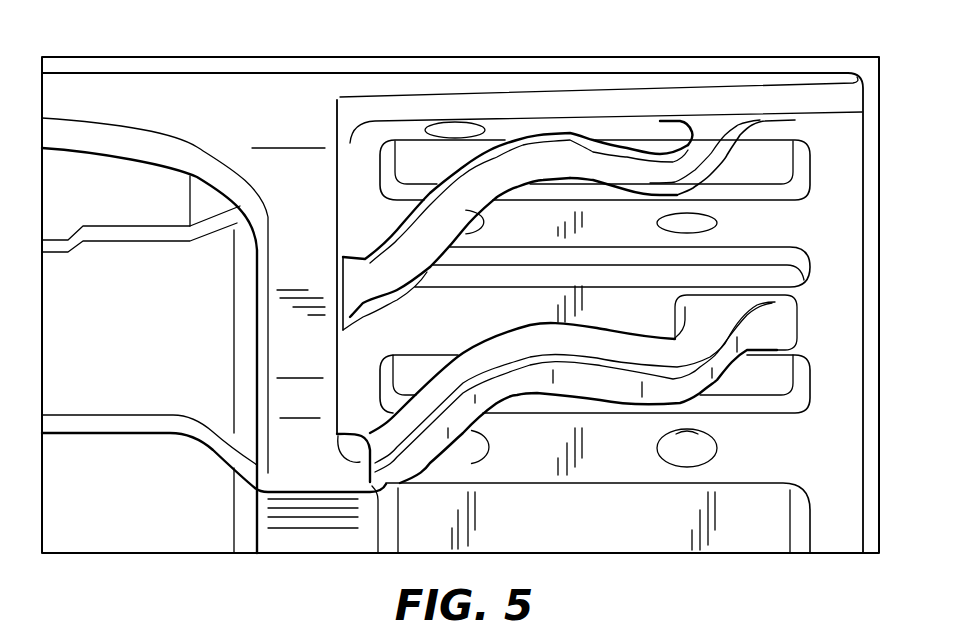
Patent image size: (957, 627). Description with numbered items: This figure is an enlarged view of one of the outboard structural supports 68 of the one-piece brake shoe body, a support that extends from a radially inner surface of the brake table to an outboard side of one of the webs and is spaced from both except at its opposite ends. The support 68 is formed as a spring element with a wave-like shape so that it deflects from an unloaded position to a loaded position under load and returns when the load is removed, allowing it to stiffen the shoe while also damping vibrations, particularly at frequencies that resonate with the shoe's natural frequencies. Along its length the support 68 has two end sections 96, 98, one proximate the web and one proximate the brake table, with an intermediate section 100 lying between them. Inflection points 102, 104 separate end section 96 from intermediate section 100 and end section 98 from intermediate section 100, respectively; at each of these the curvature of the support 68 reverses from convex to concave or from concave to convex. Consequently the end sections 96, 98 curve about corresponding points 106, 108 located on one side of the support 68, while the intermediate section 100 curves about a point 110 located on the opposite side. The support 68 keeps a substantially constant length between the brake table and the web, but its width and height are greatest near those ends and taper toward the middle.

The structural support 68 is at (572, 133).
The end section 96 is at (364, 263).
The end section 98 is at (692, 147).
The intermediate section 100 is at (528, 150).
The inflection point 102 is at (437, 220).
The inflection point 104 is at (602, 153).
The curvature point 106 is at (398, 203).
The curvature point 108 is at (662, 148).
The curvature point 110 is at (527, 203).